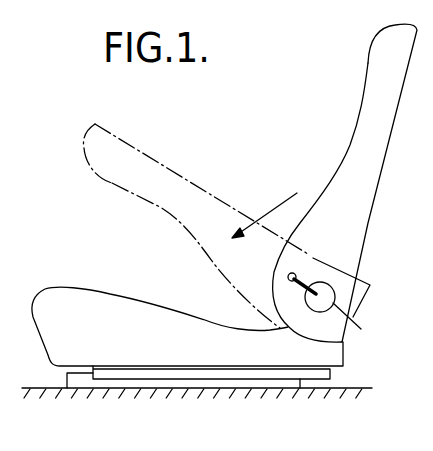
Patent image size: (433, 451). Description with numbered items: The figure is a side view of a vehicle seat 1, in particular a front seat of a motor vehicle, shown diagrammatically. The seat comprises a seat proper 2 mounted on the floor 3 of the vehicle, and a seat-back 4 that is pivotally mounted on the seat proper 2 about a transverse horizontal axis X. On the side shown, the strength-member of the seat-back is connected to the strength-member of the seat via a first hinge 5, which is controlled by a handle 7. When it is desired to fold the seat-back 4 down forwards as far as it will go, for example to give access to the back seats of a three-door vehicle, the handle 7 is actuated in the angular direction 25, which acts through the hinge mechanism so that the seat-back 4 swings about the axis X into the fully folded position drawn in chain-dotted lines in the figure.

The vehicle seat 1 is at (315, 158).
The seat proper 2 is at (110, 308).
The floor 3 is at (333, 392).
The seat-back 4 is at (370, 139).
The first hinge 5 is at (334, 296).
The handle 7 is at (296, 277).
The angular direction 25 is at (272, 210).
The transverse horizontal axis X is at (353, 322).